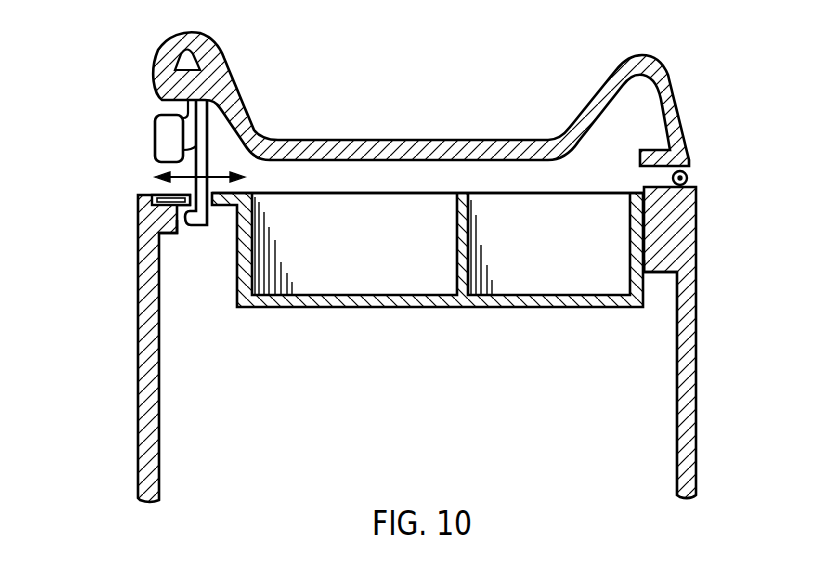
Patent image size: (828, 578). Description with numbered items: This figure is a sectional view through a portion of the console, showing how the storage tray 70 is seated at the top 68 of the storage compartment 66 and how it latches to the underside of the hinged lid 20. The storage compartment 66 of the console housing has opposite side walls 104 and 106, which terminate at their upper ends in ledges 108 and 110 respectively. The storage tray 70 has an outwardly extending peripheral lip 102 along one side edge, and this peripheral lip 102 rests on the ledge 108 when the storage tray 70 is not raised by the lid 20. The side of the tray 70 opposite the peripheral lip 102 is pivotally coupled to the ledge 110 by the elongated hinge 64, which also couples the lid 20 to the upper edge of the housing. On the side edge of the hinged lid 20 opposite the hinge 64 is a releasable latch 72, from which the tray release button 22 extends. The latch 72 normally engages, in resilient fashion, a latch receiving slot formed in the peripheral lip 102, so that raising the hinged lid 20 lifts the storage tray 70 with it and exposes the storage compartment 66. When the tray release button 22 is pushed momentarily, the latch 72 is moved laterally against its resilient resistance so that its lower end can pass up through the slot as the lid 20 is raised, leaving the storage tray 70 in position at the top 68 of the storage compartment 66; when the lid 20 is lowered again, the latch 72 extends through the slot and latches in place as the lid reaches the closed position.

The hinged lid 20 is at (430, 145).
The tray release button 22 is at (154, 138).
The elongated hinge 64 is at (690, 178).
The storage compartment 66 is at (442, 416).
The top of the storage compartment 68 is at (150, 196).
The storage tray 70 is at (353, 306).
The releasable latch 72 is at (207, 143).
The peripheral lip 102 is at (158, 192).
The side wall 104 is at (158, 415).
The side wall 106 is at (677, 424).
The ledge 108 is at (172, 235).
The ledge 110 is at (663, 273).